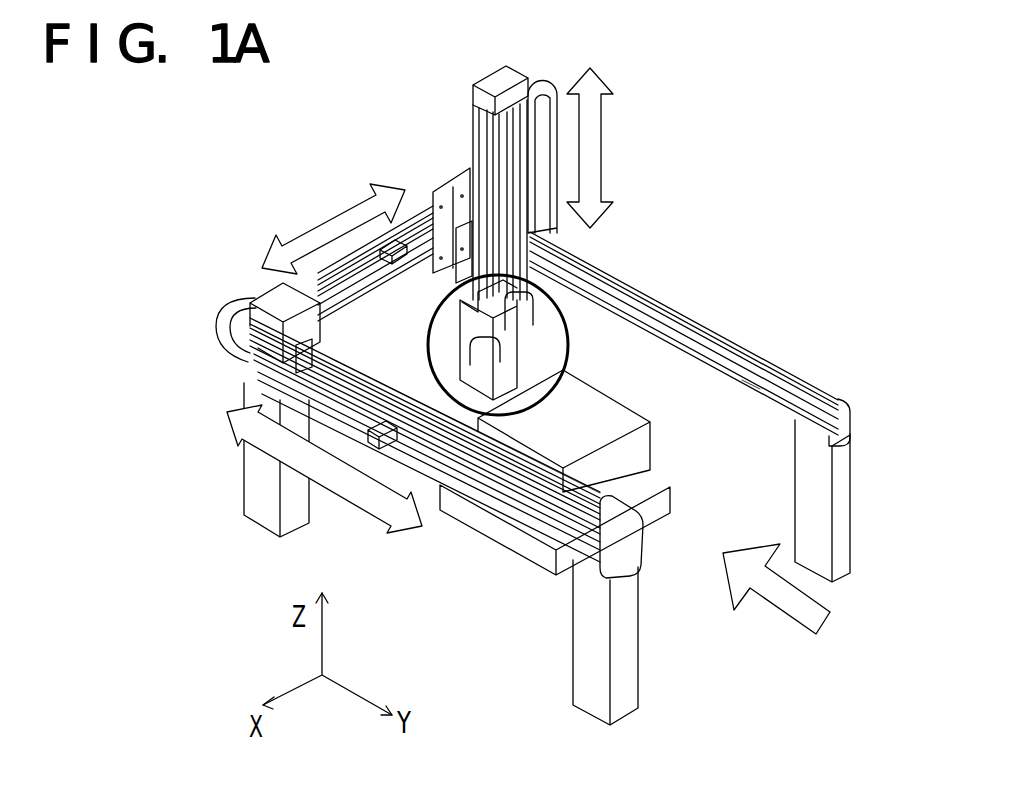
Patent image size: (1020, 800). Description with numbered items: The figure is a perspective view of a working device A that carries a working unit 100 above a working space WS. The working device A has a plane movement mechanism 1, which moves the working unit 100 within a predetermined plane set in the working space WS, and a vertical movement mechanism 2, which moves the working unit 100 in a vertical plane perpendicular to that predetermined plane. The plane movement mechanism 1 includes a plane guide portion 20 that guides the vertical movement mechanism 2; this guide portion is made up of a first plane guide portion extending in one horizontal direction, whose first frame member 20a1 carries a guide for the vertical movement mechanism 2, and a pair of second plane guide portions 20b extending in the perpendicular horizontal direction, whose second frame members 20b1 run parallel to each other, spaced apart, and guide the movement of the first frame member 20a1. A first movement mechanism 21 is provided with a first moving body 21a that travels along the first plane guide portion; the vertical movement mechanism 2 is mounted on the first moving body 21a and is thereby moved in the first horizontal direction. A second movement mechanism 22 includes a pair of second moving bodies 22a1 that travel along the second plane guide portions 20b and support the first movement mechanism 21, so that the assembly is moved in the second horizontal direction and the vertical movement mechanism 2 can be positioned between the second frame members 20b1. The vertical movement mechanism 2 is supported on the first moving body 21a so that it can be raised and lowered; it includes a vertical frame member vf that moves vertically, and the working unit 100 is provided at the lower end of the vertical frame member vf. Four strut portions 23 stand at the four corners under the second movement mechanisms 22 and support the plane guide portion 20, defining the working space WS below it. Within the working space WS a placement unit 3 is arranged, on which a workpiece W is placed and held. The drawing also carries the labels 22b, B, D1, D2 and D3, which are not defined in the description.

The plane movement mechanism 1 is at (460, 76).
The vertical movement mechanism 2 is at (536, 100).
The placement unit 3 is at (655, 508).
The plane guide portion 20 is at (272, 230).
The first frame member 20a1 is at (405, 236).
The second plane guide portions 20b is at (737, 300).
The second frame members 20b1 is at (742, 380).
The first movement mechanism 21 is at (470, 196).
The first moving body 21a is at (456, 270).
The second movement mechanism 22 is at (255, 358).
The second moving bodies 22a1 is at (216, 343).
The rail of Y-direction actuator 22b is at (379, 380).
The strut portions 23 is at (257, 512).
The working unit 100 is at (580, 345).
The workpiece W is at (615, 422).
The working space WS is at (617, 333).
The working device A is at (376, 153).
The direction B is at (776, 599).
The direction D1 is at (333, 229).
The direction D2 is at (324, 480).
The direction D3 is at (604, 148).
The vertical frame member vf is at (526, 258).